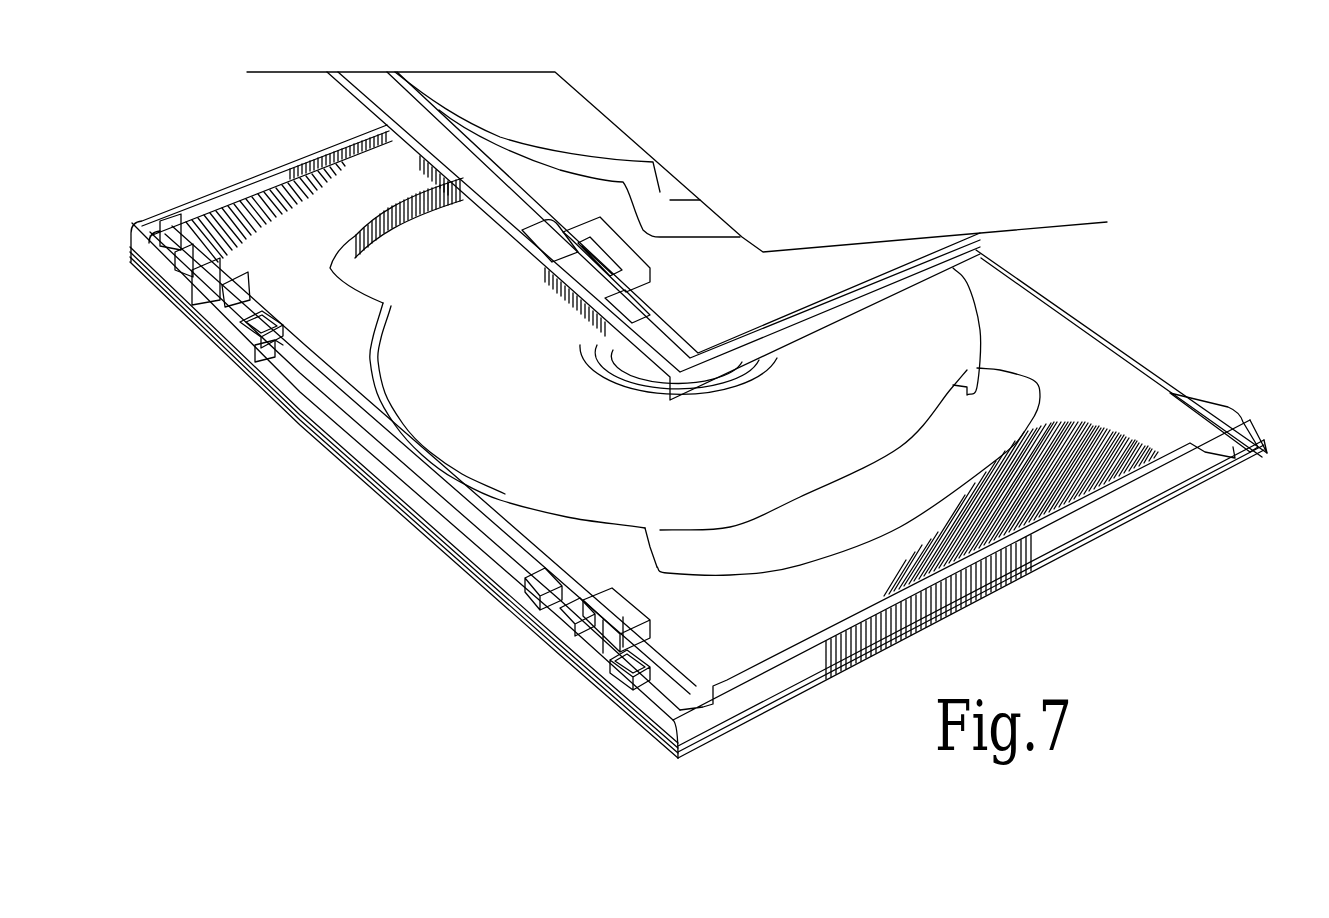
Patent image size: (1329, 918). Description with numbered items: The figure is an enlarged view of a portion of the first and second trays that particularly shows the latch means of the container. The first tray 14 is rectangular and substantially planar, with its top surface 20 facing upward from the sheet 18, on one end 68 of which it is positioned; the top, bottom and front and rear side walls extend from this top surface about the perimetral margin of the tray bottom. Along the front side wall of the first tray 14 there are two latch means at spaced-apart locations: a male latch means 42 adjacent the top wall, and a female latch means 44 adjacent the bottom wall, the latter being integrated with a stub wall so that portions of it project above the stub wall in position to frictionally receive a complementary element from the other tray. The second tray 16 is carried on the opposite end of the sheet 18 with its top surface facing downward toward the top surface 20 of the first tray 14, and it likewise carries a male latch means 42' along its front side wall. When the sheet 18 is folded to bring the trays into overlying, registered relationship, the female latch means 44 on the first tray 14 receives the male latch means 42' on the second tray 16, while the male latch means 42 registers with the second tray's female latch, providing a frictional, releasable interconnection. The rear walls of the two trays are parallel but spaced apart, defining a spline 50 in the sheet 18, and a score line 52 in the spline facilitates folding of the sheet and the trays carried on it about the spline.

The first tray 14 is at (1122, 540).
The second tray 16 is at (840, 330).
The sheet 18 is at (1237, 420).
The top surface 20 is at (745, 627).
The male latch means 42 is at (178, 307).
The male latch means 42' is at (558, 280).
The female latch means 44 is at (548, 669).
The spline 50 is at (1273, 447).
The score line 52 is at (1250, 427).
The one end of the sheet 68 is at (770, 713).